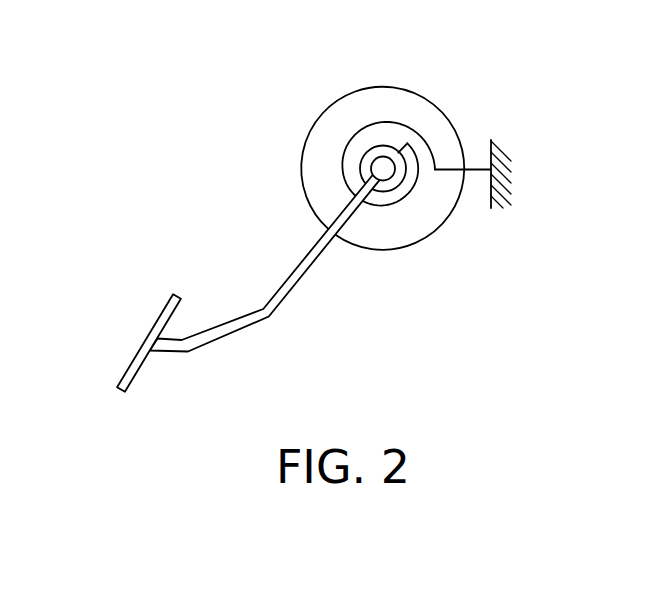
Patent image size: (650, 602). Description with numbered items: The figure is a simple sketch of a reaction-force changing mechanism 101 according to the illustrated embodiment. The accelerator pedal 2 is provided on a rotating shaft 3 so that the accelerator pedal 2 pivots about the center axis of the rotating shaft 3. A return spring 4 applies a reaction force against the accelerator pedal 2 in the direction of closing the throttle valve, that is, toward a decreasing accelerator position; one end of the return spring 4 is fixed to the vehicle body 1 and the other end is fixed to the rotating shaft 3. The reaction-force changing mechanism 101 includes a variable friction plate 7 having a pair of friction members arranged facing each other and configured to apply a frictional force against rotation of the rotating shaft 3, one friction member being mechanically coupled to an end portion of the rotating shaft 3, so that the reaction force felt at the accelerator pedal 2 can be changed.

The reaction-force changing mechanism 101 is at (182, 122).
The vehicle body 1 is at (509, 150).
The accelerator pedal 2 is at (118, 350).
The rotating shaft 3 is at (383, 168).
The return spring 4 is at (381, 121).
The variable friction plate 7 is at (303, 115).